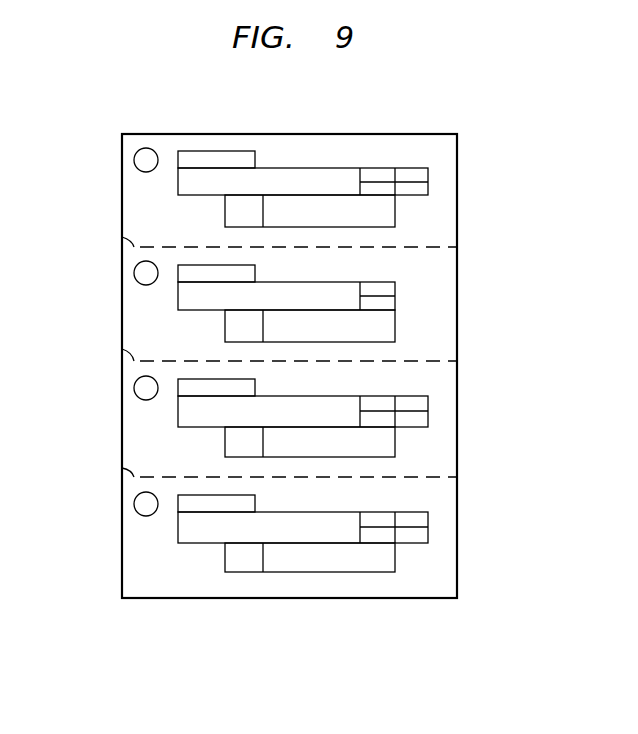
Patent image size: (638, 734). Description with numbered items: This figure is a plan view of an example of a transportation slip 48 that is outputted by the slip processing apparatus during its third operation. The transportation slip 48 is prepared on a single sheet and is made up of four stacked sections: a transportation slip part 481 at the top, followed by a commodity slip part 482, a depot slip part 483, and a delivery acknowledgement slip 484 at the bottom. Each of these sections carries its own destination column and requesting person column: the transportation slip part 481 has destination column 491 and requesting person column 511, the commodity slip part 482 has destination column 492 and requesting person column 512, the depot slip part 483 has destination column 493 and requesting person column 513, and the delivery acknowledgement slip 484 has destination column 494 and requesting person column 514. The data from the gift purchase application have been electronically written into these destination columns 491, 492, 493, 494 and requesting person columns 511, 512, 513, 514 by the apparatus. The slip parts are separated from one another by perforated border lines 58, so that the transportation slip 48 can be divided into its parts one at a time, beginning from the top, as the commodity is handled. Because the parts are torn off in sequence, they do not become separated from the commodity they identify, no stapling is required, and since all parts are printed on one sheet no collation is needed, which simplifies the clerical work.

The transportation slip 48 is at (427, 134).
The transportation slip part 481 is at (457, 155).
The commodity slip part 482 is at (457, 278).
The depot slip part 483 is at (450, 382).
The delivery acknowledgement slip 484 is at (450, 513).
The destination column 491 is at (322, 173).
The destination column 492 is at (178, 293).
The destination column 493 is at (178, 417).
The destination column 494 is at (178, 532).
The requesting person column 511 is at (390, 210).
The requesting person column 512 is at (392, 322).
The requesting person column 513 is at (388, 443).
The requesting person column 514 is at (278, 572).
The border lines 58 is at (122, 237).